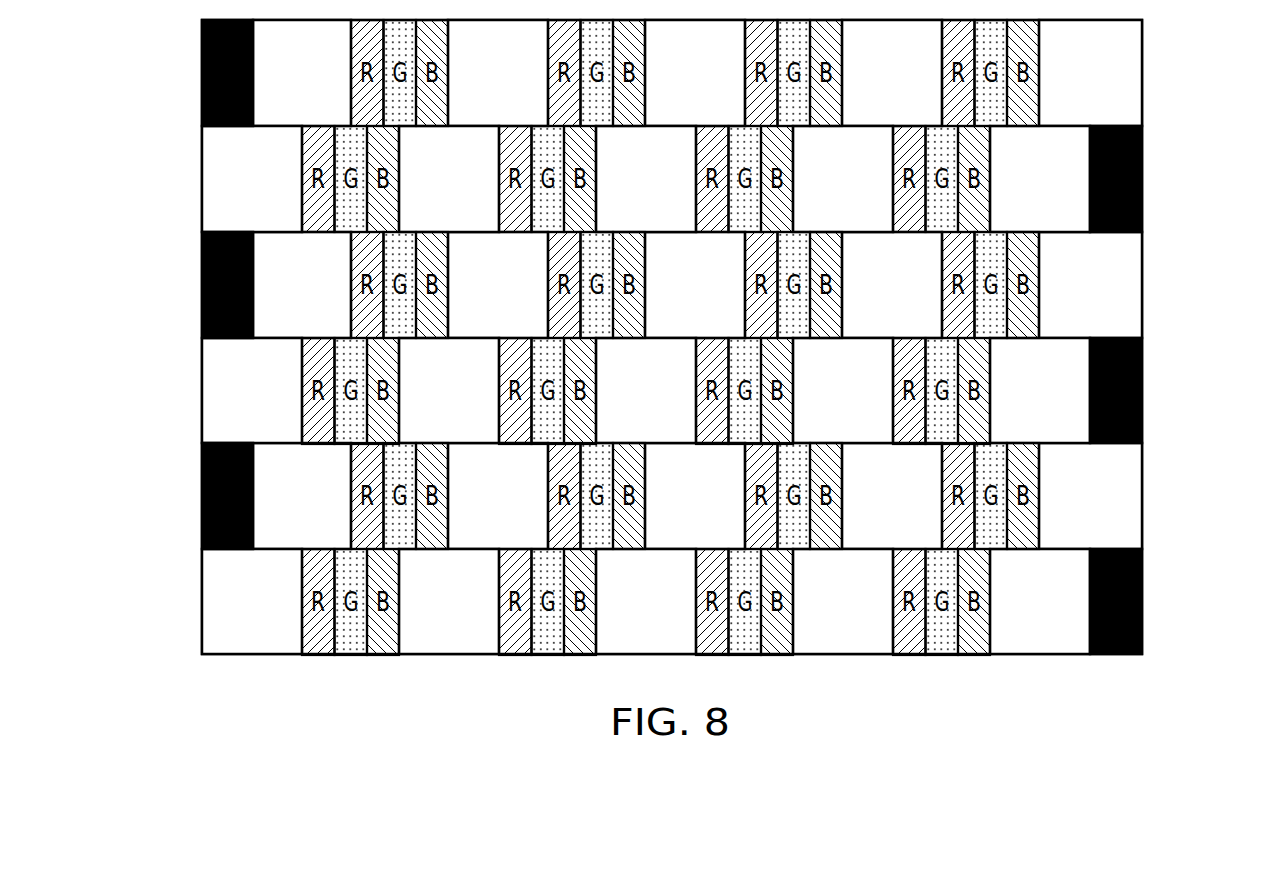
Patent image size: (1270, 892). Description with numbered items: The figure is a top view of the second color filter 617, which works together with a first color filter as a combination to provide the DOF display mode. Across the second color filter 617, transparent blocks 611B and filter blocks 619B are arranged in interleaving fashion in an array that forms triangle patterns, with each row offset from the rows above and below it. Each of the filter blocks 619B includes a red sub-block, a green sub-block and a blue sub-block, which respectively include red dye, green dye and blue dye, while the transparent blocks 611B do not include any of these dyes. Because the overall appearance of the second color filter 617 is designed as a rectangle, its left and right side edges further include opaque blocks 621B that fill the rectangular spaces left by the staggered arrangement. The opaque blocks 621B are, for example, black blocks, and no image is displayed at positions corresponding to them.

The second color filter 617 is at (1263, 696).
The transparent blocks 611B is at (255, 657).
The filter blocks 619B is at (352, 657).
The opaque blocks 621B is at (202, 69).